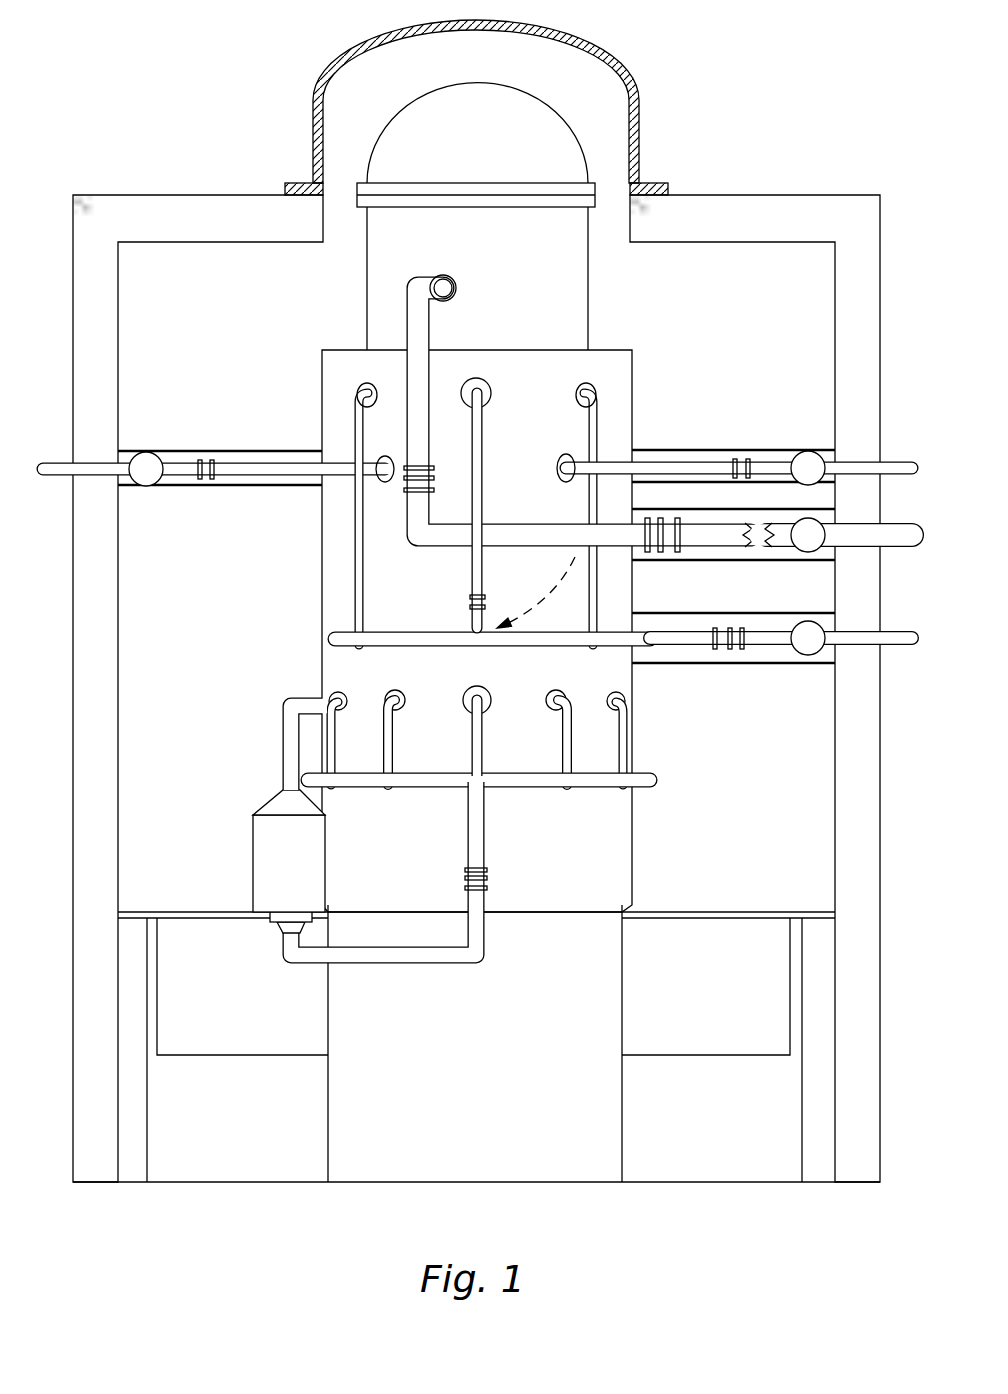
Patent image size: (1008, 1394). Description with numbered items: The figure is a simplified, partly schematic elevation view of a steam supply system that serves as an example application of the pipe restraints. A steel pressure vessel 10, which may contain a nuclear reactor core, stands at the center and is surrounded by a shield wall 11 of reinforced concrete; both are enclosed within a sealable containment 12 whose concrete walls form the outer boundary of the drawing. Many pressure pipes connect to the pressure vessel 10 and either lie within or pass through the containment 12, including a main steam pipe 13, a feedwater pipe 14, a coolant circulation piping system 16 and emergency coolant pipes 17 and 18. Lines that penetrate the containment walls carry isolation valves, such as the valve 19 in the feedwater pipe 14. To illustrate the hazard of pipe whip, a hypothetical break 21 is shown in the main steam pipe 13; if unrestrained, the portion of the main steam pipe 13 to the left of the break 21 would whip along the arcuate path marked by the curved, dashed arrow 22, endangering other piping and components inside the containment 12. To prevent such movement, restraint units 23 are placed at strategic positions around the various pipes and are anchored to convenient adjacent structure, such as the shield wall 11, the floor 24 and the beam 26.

The pressure vessel 10 is at (588, 280).
The shield wall 11 is at (632, 419).
The containment 12 is at (211, 348).
The main steam pipe 13 is at (910, 547).
The feedwater pipe 14 is at (897, 650).
The coolant circulation piping system 16 is at (532, 788).
The emergency coolant pipe 17 is at (60, 477).
The emergency coolant pipe 18 is at (893, 461).
The isolation valve 19 is at (823, 625).
The break location 21 is at (758, 546).
The curved dashed arrow 22 is at (550, 586).
The restraint units 23 is at (211, 474).
The floor 24 is at (260, 450).
The beam 26 is at (775, 665).